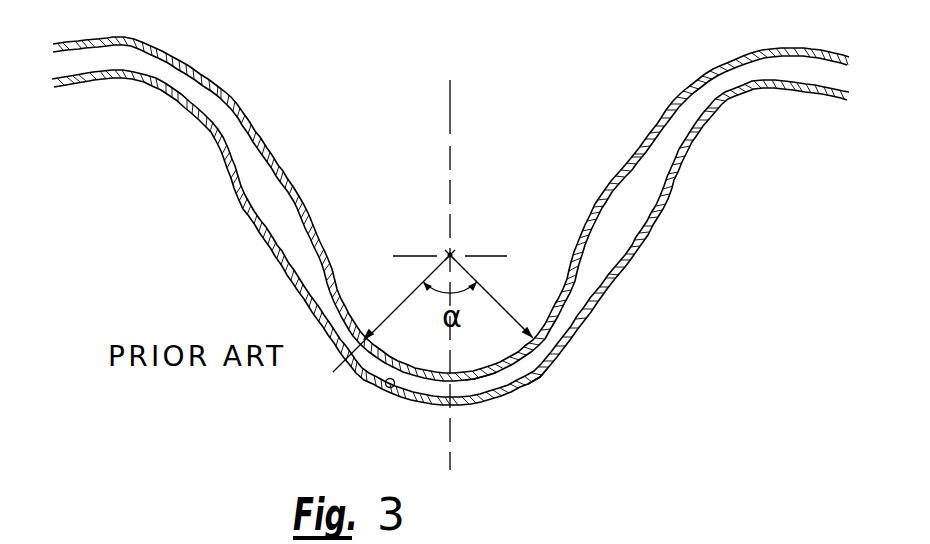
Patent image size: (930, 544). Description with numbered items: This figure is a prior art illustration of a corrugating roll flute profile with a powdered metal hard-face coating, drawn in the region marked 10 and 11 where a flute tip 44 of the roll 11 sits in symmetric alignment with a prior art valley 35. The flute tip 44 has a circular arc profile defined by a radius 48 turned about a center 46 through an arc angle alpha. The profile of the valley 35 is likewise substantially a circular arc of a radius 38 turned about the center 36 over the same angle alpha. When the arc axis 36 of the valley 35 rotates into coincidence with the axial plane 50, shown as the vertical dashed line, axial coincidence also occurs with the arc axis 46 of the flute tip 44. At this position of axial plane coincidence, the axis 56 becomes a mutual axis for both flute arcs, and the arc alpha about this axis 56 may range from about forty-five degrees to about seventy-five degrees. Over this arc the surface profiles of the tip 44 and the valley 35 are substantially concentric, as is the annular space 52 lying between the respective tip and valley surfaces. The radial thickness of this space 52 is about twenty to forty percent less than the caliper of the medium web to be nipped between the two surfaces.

The outer ply 10 is at (765, 235).
The roll 11 is at (353, 171).
The valley 35 is at (384, 385).
The center 36 is at (458, 250).
The radius 38 is at (397, 308).
The flute tip 44 is at (541, 373).
The center 46 is at (455, 248).
The radius 48 is at (493, 300).
The axial plane 50 is at (453, 123).
The annular space 52 is at (483, 388).
The axis 56 is at (447, 253).